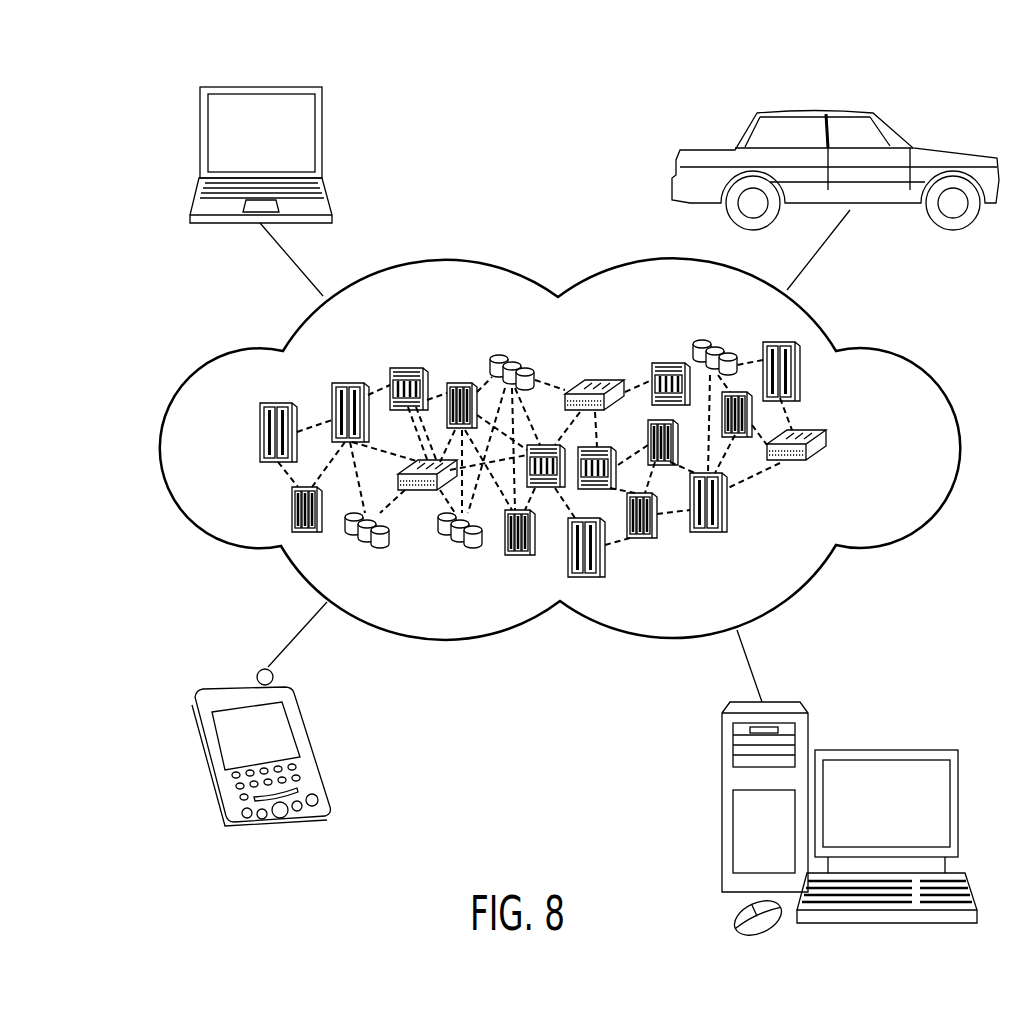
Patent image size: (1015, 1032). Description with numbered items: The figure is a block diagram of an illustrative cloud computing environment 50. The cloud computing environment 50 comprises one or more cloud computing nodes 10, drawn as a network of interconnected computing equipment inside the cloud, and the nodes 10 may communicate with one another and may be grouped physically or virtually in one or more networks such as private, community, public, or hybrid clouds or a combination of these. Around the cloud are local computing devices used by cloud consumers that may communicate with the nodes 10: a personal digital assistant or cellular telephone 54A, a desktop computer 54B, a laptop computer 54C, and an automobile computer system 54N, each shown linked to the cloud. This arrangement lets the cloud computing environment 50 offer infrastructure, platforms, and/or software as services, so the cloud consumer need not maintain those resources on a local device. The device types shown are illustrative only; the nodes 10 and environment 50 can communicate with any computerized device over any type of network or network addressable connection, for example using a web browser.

The cloud computing node 10 is at (834, 447).
The cloud computing environment 50 is at (560, 448).
The personal digital assistant or cellular telephone 54A is at (240, 687).
The desktop computer 54B is at (885, 750).
The laptop computer 54C is at (258, 86).
The automobile computer system 54N is at (820, 113).